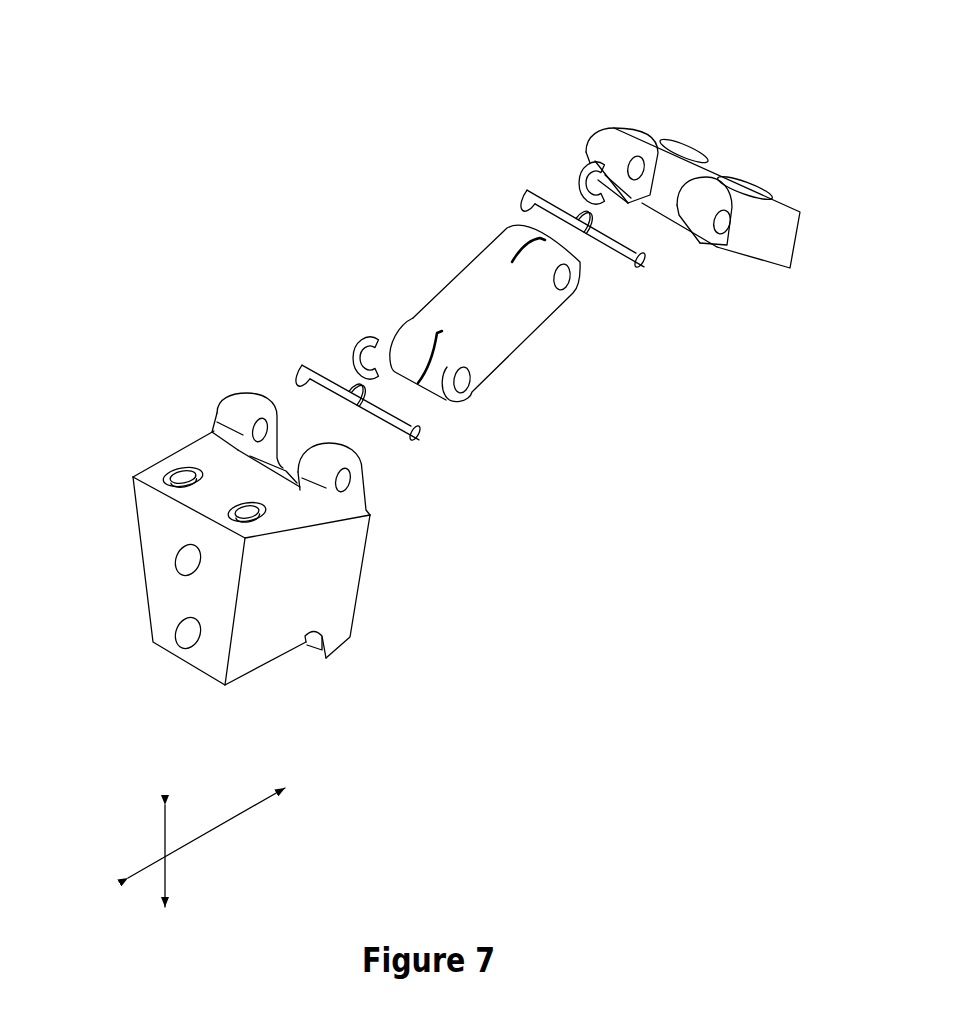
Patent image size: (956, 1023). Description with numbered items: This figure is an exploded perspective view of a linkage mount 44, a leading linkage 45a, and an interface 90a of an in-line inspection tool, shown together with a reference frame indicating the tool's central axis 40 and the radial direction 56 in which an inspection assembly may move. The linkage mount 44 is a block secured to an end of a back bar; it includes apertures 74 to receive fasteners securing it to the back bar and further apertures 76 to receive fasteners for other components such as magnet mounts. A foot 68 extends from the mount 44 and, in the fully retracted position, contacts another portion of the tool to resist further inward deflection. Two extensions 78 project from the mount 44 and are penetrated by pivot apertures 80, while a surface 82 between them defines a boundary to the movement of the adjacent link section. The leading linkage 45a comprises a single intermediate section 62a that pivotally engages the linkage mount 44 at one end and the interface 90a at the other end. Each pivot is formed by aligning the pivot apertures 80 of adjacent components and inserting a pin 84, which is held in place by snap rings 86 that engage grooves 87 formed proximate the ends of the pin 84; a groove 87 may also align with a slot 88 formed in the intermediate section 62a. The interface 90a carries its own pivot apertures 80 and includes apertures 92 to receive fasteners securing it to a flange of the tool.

The central axis 40 is at (198, 838).
The linkage mount 44 is at (162, 461).
The leading linkage 45a is at (208, 92).
The radial direction 56 is at (165, 842).
The intermediate section 62a is at (470, 273).
The foot 68 is at (349, 635).
The apertures 74 is at (183, 577).
The apertures 76 is at (228, 523).
The extensions 78 is at (247, 402).
The pivot apertures 80 is at (253, 427).
The surface 82 is at (287, 472).
The pin 84 is at (535, 193).
The snap ring 86 is at (588, 165).
The groove 87 is at (585, 223).
The slot 88 is at (518, 253).
The interface 90a is at (643, 133).
The apertures 92 is at (693, 145).